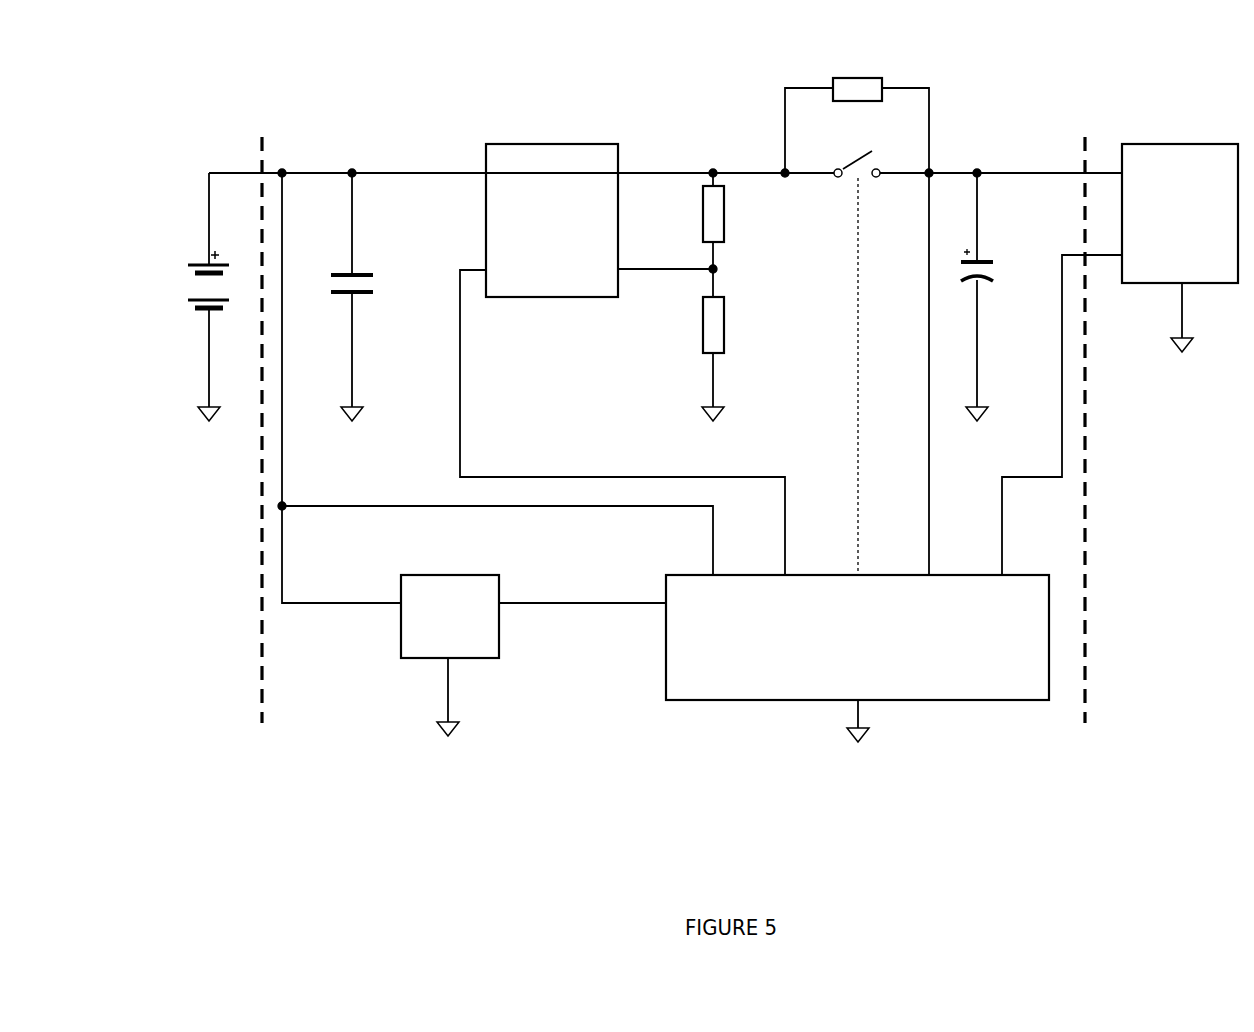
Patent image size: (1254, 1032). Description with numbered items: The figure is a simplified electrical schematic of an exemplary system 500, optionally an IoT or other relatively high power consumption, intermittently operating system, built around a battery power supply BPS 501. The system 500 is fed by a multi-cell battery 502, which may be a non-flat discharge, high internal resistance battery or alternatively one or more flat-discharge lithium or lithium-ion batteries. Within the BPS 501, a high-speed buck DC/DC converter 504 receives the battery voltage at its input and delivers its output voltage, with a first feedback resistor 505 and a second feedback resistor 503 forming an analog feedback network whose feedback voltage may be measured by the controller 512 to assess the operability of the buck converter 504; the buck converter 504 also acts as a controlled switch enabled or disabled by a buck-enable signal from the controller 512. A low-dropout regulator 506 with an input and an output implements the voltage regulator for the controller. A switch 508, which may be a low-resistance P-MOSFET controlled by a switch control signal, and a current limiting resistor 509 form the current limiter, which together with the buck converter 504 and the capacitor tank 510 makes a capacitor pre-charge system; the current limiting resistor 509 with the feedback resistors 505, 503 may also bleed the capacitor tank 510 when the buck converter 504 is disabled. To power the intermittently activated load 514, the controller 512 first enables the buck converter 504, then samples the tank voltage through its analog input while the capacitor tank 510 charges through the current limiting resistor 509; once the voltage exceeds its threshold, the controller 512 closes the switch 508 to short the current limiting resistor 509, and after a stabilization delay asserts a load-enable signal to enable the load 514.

The system 500 is at (214, 108).
The BPS 501 is at (362, 272).
The battery BT1 502 is at (205, 283).
The feedback resistor R2 503 is at (724, 312).
The buck DC/DC converter U1 504 is at (578, 298).
The feedback resistor R1 505 is at (724, 200).
The LDO regulator U4 506 is at (400, 630).
The switch SW1 508 is at (867, 172).
The current limiting resistor RCL 509 is at (885, 75).
The capacitor tank CET 510 is at (990, 262).
The controller U3 512 is at (1050, 610).
The load U2 514 is at (1165, 283).